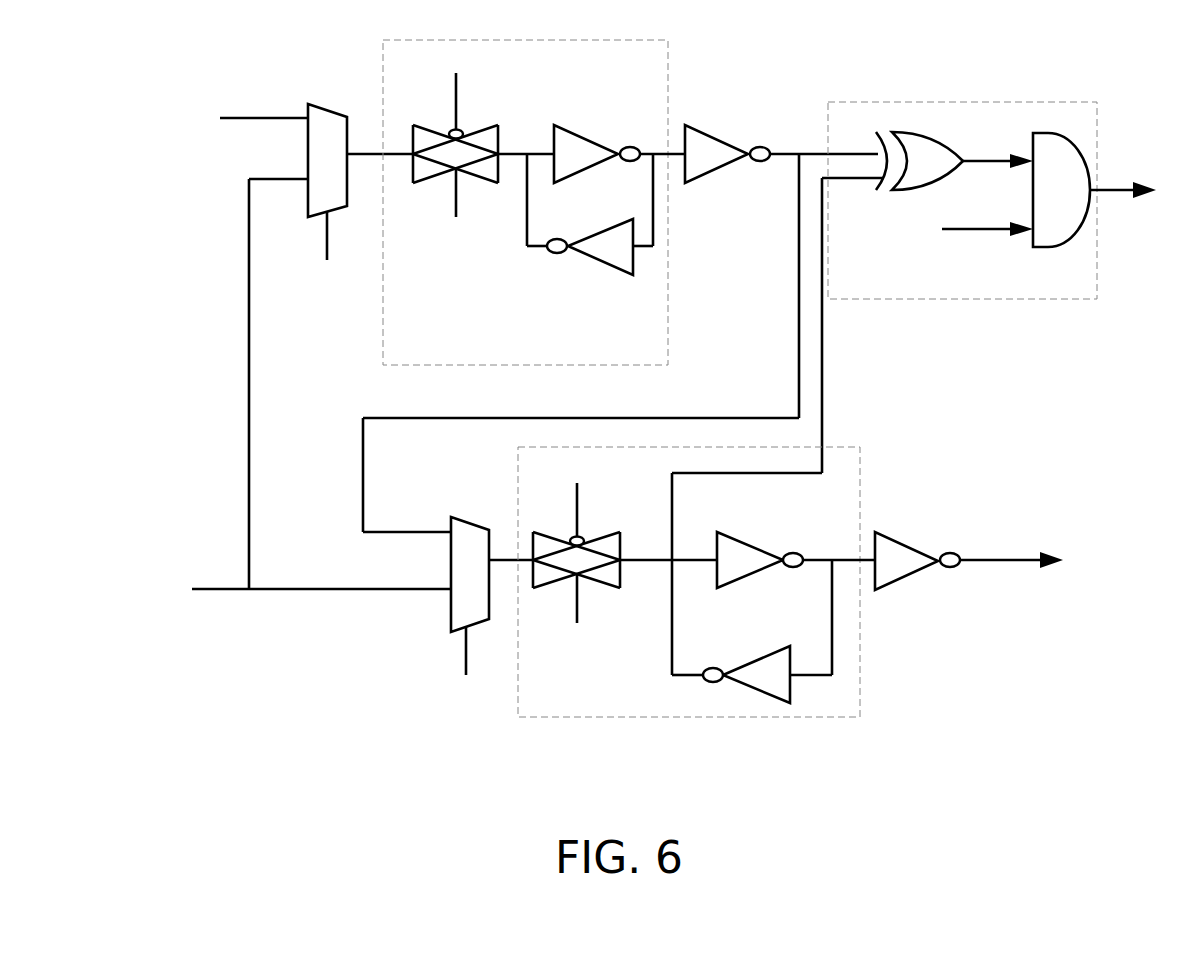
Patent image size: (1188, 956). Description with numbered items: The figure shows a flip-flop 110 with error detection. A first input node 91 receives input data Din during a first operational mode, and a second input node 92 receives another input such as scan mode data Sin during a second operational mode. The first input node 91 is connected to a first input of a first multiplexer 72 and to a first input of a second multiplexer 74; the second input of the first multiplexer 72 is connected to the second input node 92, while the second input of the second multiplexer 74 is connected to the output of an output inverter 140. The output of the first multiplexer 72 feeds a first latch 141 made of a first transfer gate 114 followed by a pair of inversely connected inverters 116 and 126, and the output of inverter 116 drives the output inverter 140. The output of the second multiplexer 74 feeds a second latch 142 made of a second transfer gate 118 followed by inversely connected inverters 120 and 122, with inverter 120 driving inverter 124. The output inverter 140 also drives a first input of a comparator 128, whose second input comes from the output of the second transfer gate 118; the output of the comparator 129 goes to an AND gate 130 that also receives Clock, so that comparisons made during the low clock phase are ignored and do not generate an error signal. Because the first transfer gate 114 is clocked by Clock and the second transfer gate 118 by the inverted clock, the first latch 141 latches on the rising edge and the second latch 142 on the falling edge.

The flip-flop 110 is at (667, 429).
The first multiplexer 72 is at (331, 346).
The second multiplexer 74 is at (581, 556).
The first input node 91 is at (249, 591).
The second input node 92 is at (284, 96).
The first transfer gate 114 is at (483, 145).
The inverter 116 is at (606, 185).
The inverter 126 is at (590, 247).
The output inverter 140 is at (781, 271).
The first latch 141 is at (534, 202).
The second latch 142 is at (696, 582).
The second transfer gate 118 is at (625, 553).
The inverter 120 is at (773, 574).
The inverter 122 is at (752, 674).
The inverter 124 is at (969, 561).
The comparator 128 is at (914, 287).
The comparator 129 is at (852, 302).
The AND gate 130 is at (1014, 190).